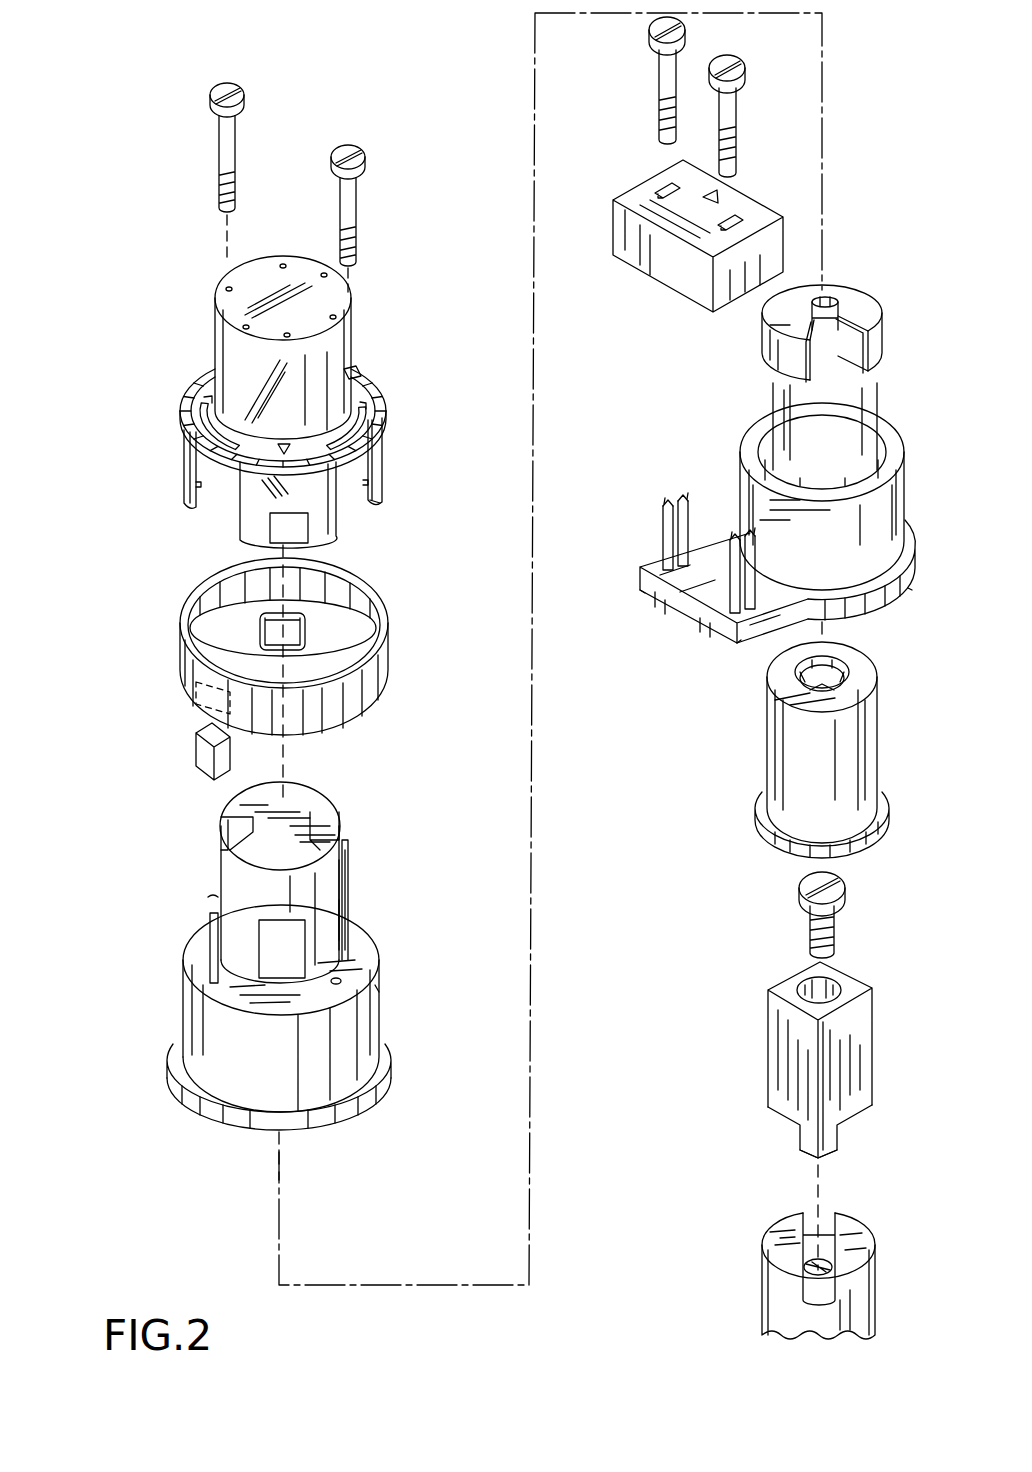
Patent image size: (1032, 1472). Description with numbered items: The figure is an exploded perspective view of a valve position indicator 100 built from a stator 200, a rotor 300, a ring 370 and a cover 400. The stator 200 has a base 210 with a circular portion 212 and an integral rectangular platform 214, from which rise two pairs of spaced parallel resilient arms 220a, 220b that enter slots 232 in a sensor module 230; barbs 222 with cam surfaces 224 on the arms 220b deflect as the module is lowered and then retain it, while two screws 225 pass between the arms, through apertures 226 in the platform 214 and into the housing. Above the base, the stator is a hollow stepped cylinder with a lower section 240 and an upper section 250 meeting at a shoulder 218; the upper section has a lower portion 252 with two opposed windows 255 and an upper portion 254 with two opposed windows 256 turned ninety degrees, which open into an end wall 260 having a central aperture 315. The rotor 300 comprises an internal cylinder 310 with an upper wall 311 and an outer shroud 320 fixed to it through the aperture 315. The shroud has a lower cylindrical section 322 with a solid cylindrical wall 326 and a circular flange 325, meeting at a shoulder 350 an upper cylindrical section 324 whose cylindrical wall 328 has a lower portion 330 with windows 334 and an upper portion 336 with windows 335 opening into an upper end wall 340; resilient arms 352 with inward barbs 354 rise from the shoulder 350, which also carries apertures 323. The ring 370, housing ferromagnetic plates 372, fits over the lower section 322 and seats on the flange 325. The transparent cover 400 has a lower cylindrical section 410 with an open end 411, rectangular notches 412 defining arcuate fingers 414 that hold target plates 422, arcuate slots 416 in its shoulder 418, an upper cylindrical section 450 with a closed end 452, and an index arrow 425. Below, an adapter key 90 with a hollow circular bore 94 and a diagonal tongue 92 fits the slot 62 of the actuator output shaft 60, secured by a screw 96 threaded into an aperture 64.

The valve position indicator 100 is at (116, 152).
The upper cylindrical section 450 is at (214, 316).
The closed end 452 is at (268, 268).
The cover 400 is at (390, 404).
The lower cylindrical section 410 is at (388, 455).
The arcuate slots 416 is at (204, 400).
The shoulder 418 is at (356, 372).
The arcuate fingers 414 is at (186, 440).
The rectangular notches 412 is at (195, 490).
The open end 411 is at (382, 502).
The index arrow 425 is at (290, 456).
The ring 370 is at (388, 668).
The target plates 422 is at (305, 634).
The ferromagnetic plates 372 is at (200, 752).
The upper end wall 340 is at (298, 800).
The upper cylindrical section 324 is at (224, 832).
The windows 335 is at (332, 814).
The cylindrical wall 328 is at (232, 870).
The barbs 354 is at (346, 842).
The resilient arms 352 is at (349, 885).
The upper portion 336 is at (348, 860).
The shoulder 350 is at (349, 920).
The windows 334 is at (259, 950).
The lower portion 330 is at (325, 948).
The apertures 323 is at (341, 979).
The lower cylindrical section 322 is at (183, 1000).
The outer shroud 320 is at (379, 1010).
The rotor 300 is at (377, 990).
The circular flange 325 is at (213, 1115).
The solid cylindrical wall 326 is at (340, 1085).
The screws 225 is at (736, 58).
The sensor module 230 is at (785, 240).
The slots 232 is at (662, 188).
The end wall 260 is at (775, 312).
The upper portion 254 is at (883, 318).
The aperture 315 is at (856, 300).
The windows 256 is at (826, 290).
The windows 255 is at (772, 396).
The upper section 250 is at (878, 396).
The lower section 240 is at (880, 488).
The shoulder 218 is at (763, 440).
The lower portion 252 is at (838, 460).
The base 210 is at (876, 618).
The circular portion 212 is at (870, 605).
The stator 200 is at (909, 589).
The rectangular platform 214 is at (674, 610).
The apertures 226 is at (642, 594).
The resilient arms 220a is at (663, 516).
The resilient arms 220b is at (731, 546).
The barbs 222 is at (670, 500).
The cam surfaces 224 is at (680, 498).
The internal cylinder 310 is at (878, 746).
The upper wall 311 is at (858, 672).
The screw 96 is at (800, 893).
The adapter key 90 is at (873, 1030).
The hollow circular bore 94 is at (835, 977).
The diagonal tongue 92 is at (799, 1145).
The actuator output shaft 60 is at (876, 1262).
The slot 62 is at (830, 1213).
The aperture 64 is at (805, 1270).